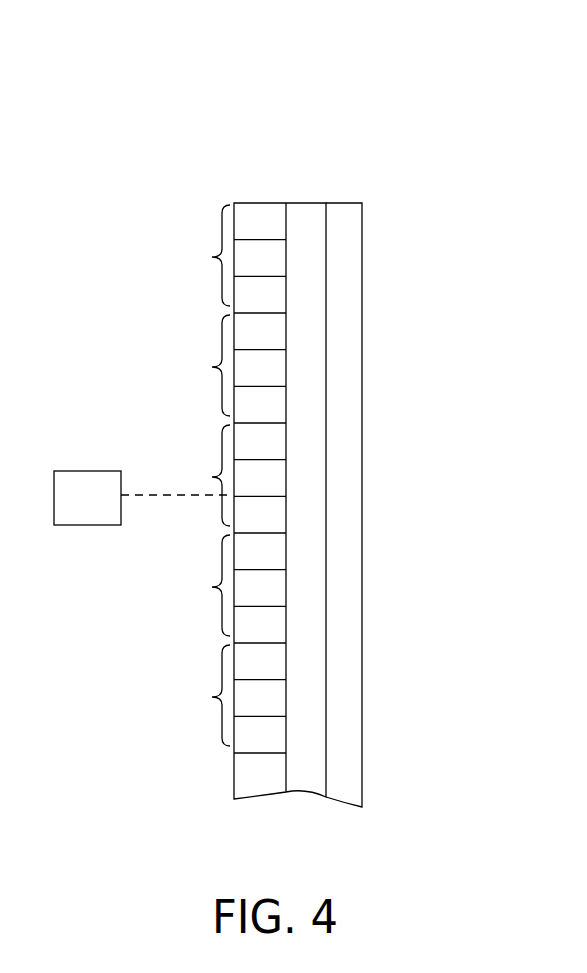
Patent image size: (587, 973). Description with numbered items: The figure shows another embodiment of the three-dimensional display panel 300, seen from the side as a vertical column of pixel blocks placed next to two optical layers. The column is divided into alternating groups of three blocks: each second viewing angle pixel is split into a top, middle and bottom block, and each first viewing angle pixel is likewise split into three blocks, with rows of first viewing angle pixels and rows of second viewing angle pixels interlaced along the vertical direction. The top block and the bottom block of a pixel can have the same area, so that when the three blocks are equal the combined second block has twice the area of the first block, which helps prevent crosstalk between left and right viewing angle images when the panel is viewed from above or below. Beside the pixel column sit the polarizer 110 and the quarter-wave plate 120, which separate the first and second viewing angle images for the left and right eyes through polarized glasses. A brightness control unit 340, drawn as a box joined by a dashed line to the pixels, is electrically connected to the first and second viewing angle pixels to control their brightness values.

The 3D display panel 300 is at (148, 88).
The polarizer 110 is at (308, 208).
The quarter-wave plate 120 is at (345, 211).
The brightness control unit 340 is at (84, 471).